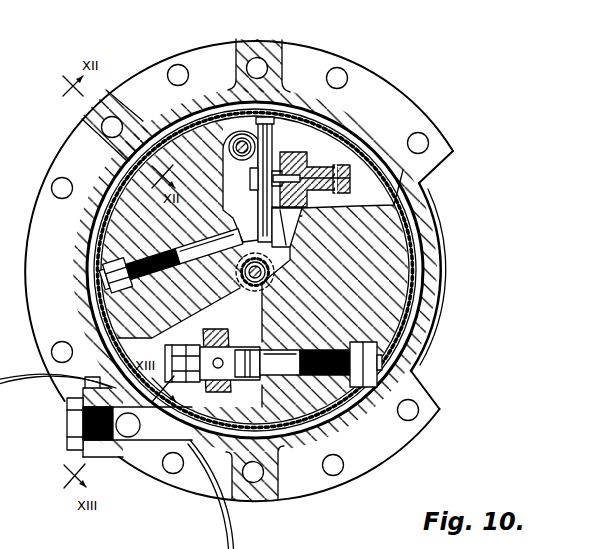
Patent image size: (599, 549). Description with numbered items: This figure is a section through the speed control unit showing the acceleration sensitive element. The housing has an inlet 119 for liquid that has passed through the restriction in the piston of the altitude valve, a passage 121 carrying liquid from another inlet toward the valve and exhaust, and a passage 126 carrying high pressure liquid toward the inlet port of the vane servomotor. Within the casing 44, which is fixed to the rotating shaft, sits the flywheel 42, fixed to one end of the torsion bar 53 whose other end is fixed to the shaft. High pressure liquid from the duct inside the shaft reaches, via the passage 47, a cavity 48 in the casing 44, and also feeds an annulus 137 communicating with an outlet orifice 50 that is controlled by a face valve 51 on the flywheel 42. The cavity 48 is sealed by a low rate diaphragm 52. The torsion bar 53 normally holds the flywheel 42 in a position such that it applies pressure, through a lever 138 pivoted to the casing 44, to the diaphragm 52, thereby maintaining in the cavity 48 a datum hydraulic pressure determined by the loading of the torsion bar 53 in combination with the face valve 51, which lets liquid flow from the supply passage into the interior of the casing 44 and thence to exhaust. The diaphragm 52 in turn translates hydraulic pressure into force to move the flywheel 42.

The inlet 119 is at (262, 66).
The passage 121 is at (110, 127).
The passage 126 is at (252, 480).
The flywheel 42 is at (397, 233).
The casing 44 is at (420, 264).
The low rate diaphragm 52 is at (270, 125).
The lever 138 is at (285, 156).
The cavity 48 is at (275, 220).
The passage 47 is at (270, 247).
The torsion bar 53 is at (249, 285).
The outlet orifice 50 is at (240, 344).
The annulus 137 is at (219, 390).
The face valve 51 is at (254, 386).